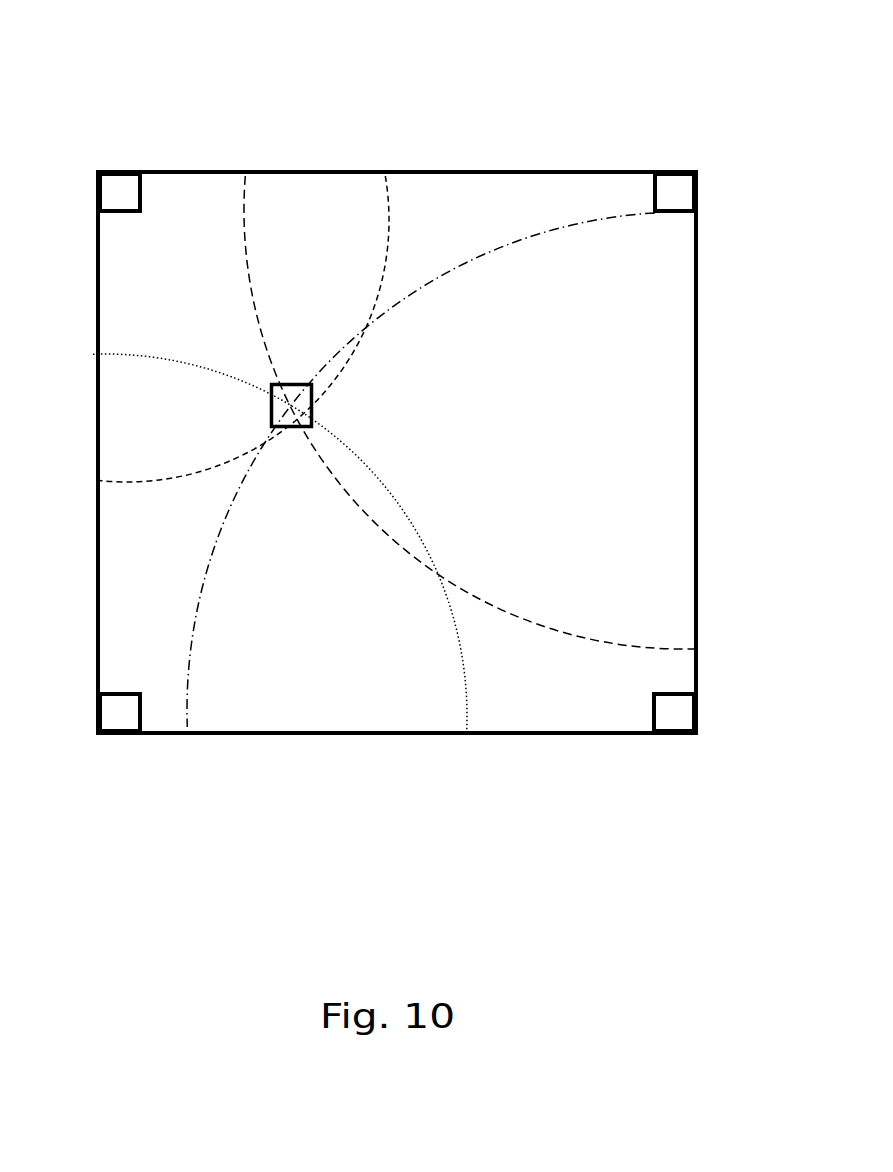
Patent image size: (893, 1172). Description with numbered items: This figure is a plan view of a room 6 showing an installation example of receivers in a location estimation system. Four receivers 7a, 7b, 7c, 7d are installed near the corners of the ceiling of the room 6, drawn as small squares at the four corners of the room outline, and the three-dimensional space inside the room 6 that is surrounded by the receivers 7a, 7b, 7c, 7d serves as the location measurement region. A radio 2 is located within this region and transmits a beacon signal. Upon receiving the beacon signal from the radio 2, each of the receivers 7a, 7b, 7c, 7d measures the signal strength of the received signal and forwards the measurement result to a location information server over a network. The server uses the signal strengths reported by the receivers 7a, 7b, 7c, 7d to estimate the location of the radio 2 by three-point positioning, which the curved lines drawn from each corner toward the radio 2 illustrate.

The room 6 is at (382, 31).
The receiver 7a is at (110, 733).
The receiver 7b is at (677, 735).
The receiver 7c is at (117, 172).
The receiver 7d is at (677, 172).
The radio 2 is at (313, 410).